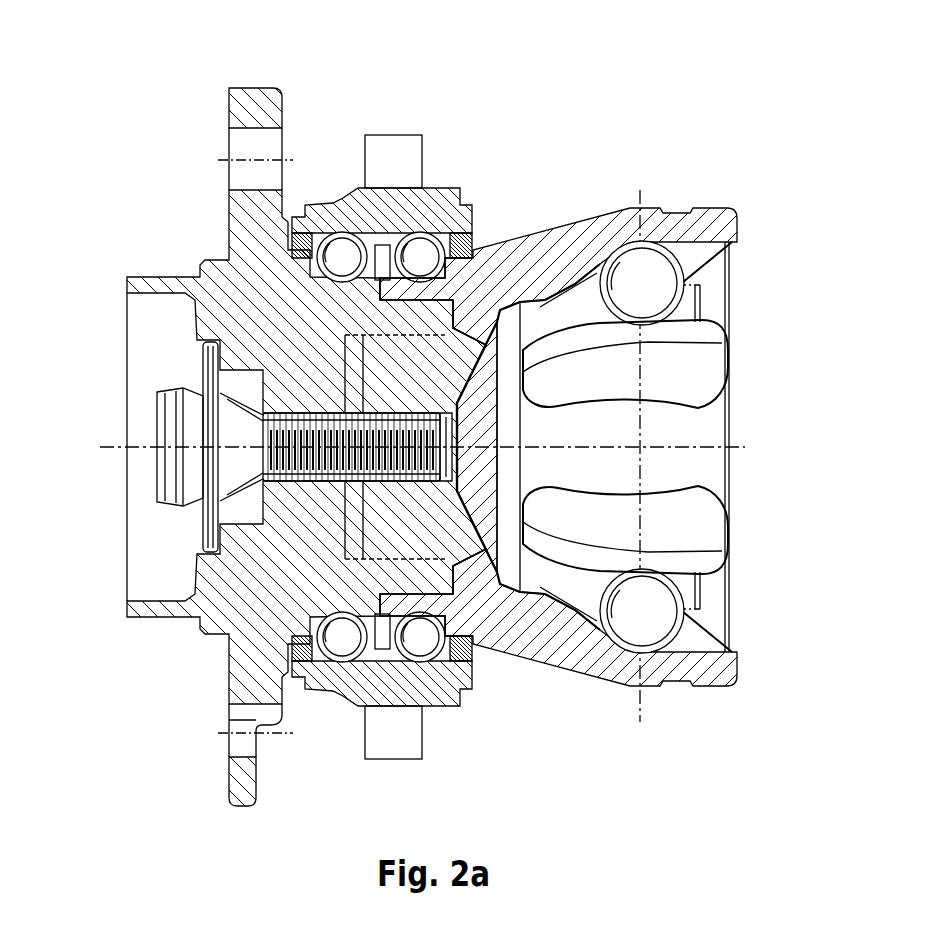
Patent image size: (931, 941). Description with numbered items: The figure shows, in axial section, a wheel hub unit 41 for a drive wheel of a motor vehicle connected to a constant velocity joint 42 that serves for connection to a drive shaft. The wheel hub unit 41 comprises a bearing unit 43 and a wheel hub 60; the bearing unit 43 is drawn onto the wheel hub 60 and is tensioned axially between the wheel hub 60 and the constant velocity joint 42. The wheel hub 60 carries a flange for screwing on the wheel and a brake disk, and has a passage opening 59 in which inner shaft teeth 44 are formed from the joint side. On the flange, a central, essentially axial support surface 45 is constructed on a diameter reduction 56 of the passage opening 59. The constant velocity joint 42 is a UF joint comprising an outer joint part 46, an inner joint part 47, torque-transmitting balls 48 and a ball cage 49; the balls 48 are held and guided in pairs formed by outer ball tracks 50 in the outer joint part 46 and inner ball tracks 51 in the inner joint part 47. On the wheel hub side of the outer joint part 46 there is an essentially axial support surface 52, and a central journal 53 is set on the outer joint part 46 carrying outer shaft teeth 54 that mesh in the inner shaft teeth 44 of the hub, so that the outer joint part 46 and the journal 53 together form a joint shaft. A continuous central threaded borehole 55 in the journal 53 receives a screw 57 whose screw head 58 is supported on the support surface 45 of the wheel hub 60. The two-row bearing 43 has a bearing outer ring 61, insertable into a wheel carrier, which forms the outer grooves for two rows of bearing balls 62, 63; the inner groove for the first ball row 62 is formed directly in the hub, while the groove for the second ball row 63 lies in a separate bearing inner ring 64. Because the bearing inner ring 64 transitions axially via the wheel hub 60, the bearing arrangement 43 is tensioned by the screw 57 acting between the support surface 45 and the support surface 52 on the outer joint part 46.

The wheel hub unit 41 is at (299, 132).
The constant velocity joint 42 is at (667, 176).
The bearing unit 43 is at (439, 132).
The inner shaft teeth 44 is at (347, 333).
The axial support surface 45 is at (197, 357).
The outer joint part 46 is at (704, 220).
The inner joint part 47 is at (668, 428).
The torque-transmitting balls 48 is at (662, 259).
The ball cage 49 is at (703, 358).
The outer ball tracks 50 is at (596, 268).
The inner ball tracks 51 is at (575, 313).
The axial support surface 52 is at (470, 280).
The central journal 53 is at (413, 523).
The outer shaft teeth 54 is at (425, 347).
The central threaded borehole 55 is at (460, 424).
The diameter reduction 56 is at (215, 376).
The screw 57 is at (430, 457).
The screw head 58 is at (197, 480).
The passage opening 59 is at (313, 333).
The wheel hub 60 is at (238, 210).
The bearing outer ring 61 is at (348, 213).
The first ball row 62 is at (340, 245).
The second ball row 63 is at (420, 242).
The bearing inner ring 64 is at (492, 326).